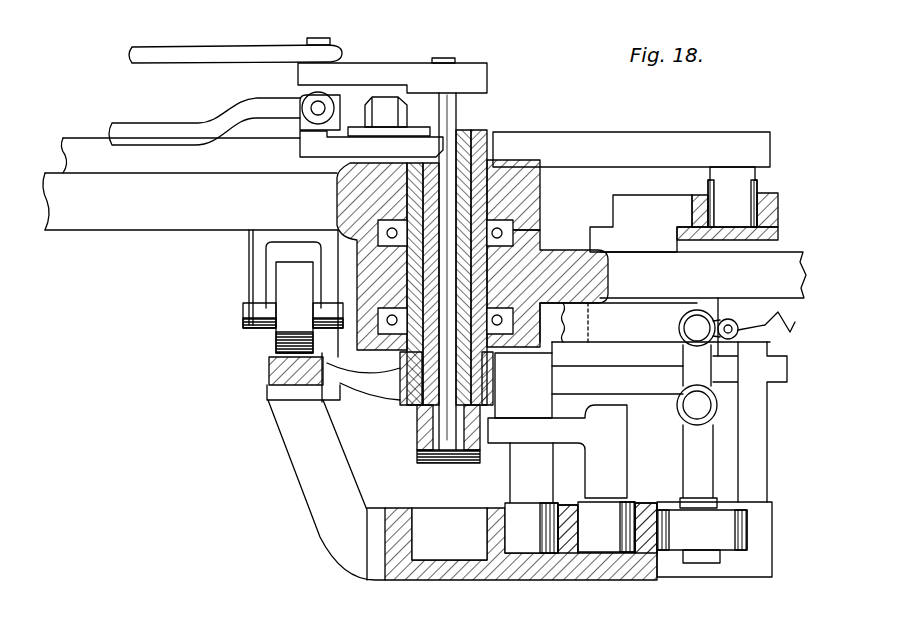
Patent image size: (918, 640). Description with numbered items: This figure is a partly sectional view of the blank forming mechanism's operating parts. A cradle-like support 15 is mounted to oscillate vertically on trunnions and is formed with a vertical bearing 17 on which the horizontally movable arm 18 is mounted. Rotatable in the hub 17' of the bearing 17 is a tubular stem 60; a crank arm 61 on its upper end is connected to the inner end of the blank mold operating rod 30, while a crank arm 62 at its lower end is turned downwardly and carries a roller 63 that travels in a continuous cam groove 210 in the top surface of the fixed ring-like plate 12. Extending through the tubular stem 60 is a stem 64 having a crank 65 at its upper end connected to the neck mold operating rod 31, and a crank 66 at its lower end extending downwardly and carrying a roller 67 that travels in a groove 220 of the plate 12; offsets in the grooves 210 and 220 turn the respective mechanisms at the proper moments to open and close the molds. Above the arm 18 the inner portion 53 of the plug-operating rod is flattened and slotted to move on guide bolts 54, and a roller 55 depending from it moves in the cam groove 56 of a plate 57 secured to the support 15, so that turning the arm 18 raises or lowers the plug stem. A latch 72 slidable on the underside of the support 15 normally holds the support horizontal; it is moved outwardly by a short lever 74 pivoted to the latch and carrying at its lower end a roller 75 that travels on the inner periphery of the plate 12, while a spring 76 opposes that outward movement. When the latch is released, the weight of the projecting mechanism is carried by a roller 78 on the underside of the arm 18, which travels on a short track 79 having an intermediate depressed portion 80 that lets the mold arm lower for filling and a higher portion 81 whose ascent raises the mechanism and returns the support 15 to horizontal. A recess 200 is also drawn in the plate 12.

The fixed ring-like plate 12 is at (488, 580).
The cradle-like support 15 is at (703, 275).
The vertical bearing 17 is at (547, 277).
The hub 17' is at (536, 195).
The horizontally movable arm 18 is at (190, 184).
The blank mold operating rod 30 is at (232, 116).
The neck mold operating rod 31 is at (183, 58).
The inner portion of the rod 53 is at (607, 140).
The guide bolts 54 is at (382, 108).
The roller 55 is at (743, 193).
The cam groove 56 is at (778, 207).
The plate 57 is at (778, 235).
The tubular stem 60 is at (408, 407).
The crank arm 61 is at (323, 147).
The crank arm 62 is at (513, 390).
The roller 63 is at (523, 510).
The stem 64 is at (458, 115).
The crank 65 is at (360, 73).
The crank 66 is at (557, 451).
The roller 67 is at (630, 505).
The latch 72 is at (618, 322).
The short lever 74 is at (693, 447).
The roller 75 is at (747, 533).
The spring 76 is at (771, 320).
The roller 78 is at (288, 282).
The track 79 is at (268, 372).
The depressed portion 80 is at (618, 374).
The higher portion 81 is at (787, 362).
The recess 200 is at (442, 552).
The cam groove 210 is at (543, 553).
The groove 220 is at (625, 553).